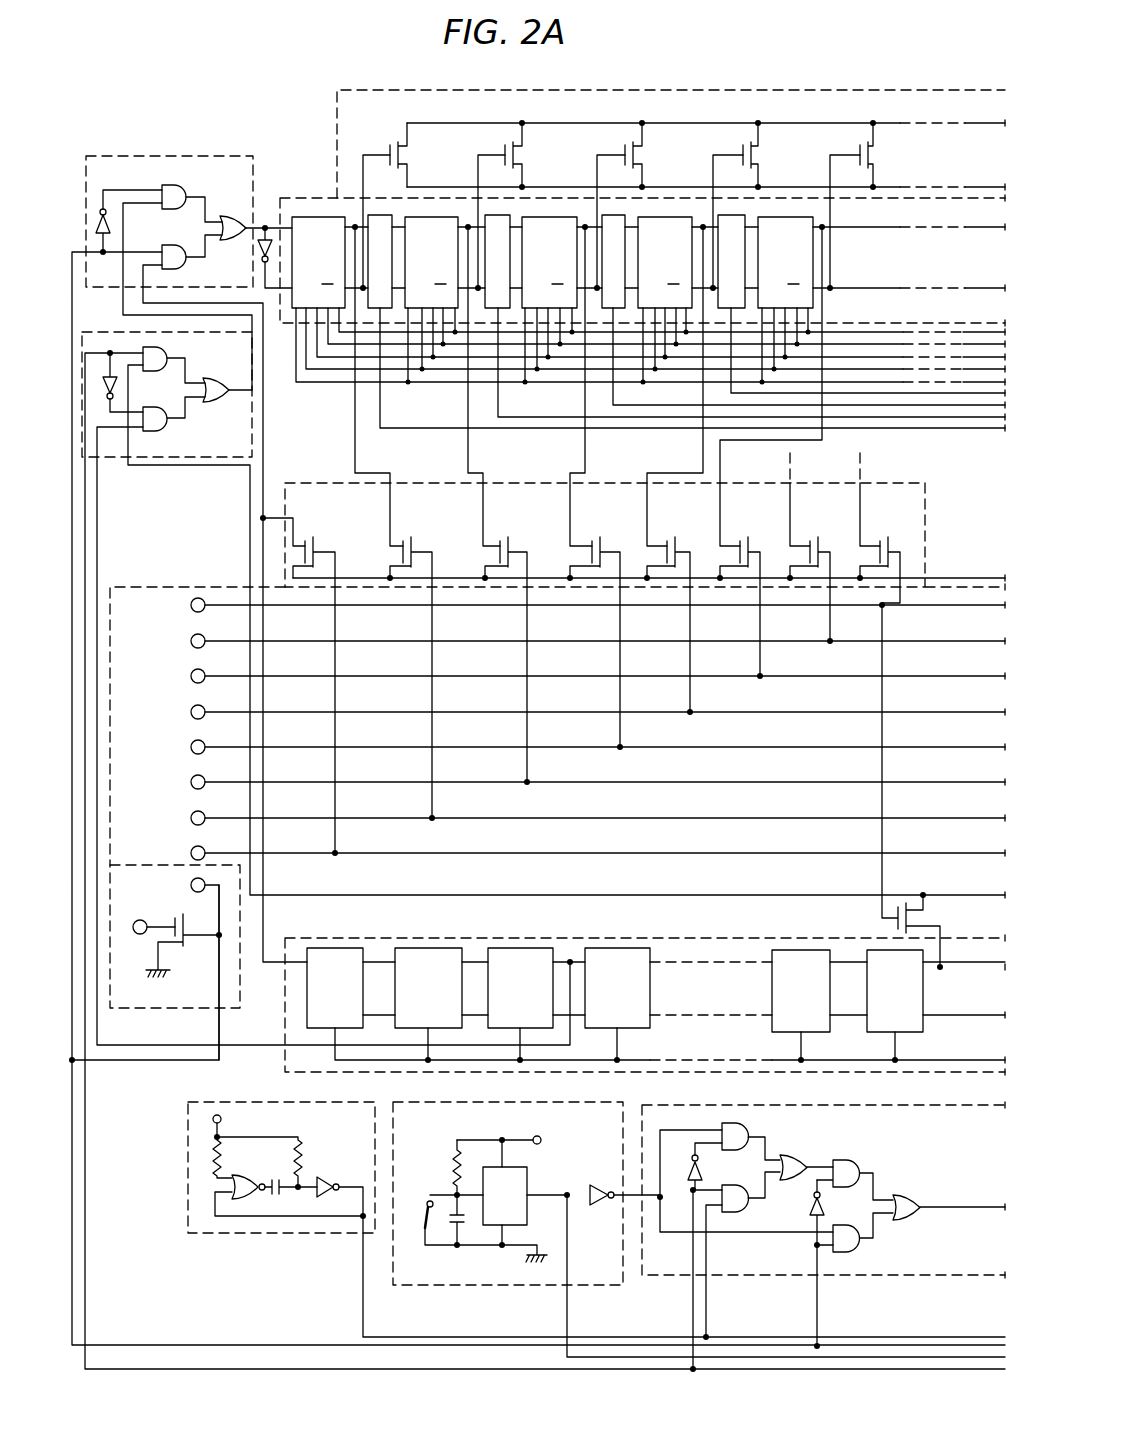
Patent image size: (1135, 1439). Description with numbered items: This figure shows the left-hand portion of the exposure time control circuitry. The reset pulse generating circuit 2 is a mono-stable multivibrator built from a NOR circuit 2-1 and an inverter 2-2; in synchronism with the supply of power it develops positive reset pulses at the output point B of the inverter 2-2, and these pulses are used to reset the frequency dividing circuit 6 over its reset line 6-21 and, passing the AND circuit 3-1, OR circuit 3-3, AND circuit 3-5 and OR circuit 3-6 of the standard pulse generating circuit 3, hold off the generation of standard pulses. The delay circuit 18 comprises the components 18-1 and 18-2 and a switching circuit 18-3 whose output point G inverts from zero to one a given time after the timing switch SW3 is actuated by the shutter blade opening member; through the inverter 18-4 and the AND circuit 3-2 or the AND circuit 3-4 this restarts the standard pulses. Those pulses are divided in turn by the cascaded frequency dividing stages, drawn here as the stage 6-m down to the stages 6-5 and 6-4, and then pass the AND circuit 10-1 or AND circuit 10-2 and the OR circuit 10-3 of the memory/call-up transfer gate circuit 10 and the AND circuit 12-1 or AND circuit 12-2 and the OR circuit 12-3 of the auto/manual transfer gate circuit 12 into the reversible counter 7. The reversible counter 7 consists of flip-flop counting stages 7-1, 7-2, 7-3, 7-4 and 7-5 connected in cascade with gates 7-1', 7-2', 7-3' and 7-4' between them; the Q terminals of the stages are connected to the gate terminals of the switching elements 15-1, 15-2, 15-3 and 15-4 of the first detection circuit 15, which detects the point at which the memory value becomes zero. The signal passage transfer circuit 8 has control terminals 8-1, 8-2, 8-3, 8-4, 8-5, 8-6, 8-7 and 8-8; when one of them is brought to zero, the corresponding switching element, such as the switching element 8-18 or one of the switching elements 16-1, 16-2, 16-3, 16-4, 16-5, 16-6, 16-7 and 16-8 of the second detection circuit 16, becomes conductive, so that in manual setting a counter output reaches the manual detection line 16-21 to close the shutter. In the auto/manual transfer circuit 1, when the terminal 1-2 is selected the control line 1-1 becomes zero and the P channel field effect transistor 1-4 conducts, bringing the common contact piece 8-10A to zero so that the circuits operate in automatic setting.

The auto/manual transfer circuit 1 is at (137, 1008).
The control line 1-1 is at (219, 1016).
The terminal 1-2 is at (177, 886).
The P channel field effect transistor 1-4 is at (184, 943).
The reset pulse generating circuit 2 is at (188, 1163).
The NOR circuit 2-1 is at (245, 1177).
The inverter 2-2 is at (326, 1176).
The standard pulse generating circuit 3 is at (730, 1275).
The AND circuit 3-1 is at (738, 1212).
The AND circuit 3-2 is at (740, 1124).
The OR circuit 3-3 is at (795, 1156).
The AND circuit 3-4 is at (850, 1252).
The AND circuit 3-5 is at (853, 1162).
The OR circuit 3-6 is at (912, 1196).
The frequency dividing circuit 6 is at (745, 935).
The frequency dividing stage 6-m is at (335, 988).
The frequency dividing stage 6-5 is at (801, 991).
The frequency dividing stage 6-4 is at (895, 991).
The reset line 6-21 is at (958, 1062).
The reversible counter 7 is at (318, 195).
The flip-flop counting stage 7-1 is at (318, 262).
The gate 7-1' is at (380, 261).
The flip-flop counting stage 7-2 is at (431, 262).
The gate 7-2' is at (497, 261).
The flip-flop counting stage 7-3 is at (549, 262).
The gate 7-3' is at (613, 261).
The flip-flop counting stage 7-4 is at (665, 262).
The gate 7-4' is at (731, 261).
The flip-flop counting stage 7-5 is at (785, 262).
The signal passage transfer circuit 8 is at (125, 587).
The control terminal 8-1 is at (576, 853).
The control terminal 8-2 is at (576, 818).
The control terminal 8-3 is at (576, 782).
The control terminal 8-4 is at (576, 747).
The control terminal 8-5 is at (576, 712).
The control terminal 8-6 is at (576, 676).
The control terminal 8-7 is at (576, 641).
The control terminal 8-8 is at (576, 605).
The common contact piece 8-10A is at (142, 917).
The switching element 8-18 is at (902, 898).
The memory/call-up transfer gate circuit 10 is at (120, 332).
The AND circuit 10-1 is at (166, 350).
The AND circuit 10-2 is at (158, 407).
The OR circuit 10-3 is at (213, 402).
The auto/manual transfer gate circuit 12 is at (212, 156).
The AND circuit 12-1 is at (180, 185).
The AND circuit 12-2 is at (178, 246).
The OR circuit 12-3 is at (233, 215).
The No. 1 detection circuit 15 is at (930, 88).
The switching element 15-1 is at (411, 162).
The switching element 15-2 is at (527, 162).
The switching element 15-3 is at (645, 162).
The switching element 15-4 is at (762, 162).
The No. 2 detection circuit 16 is at (928, 497).
The switching element 16-1 is at (310, 535).
The switching element 16-2 is at (410, 537).
The switching element 16-3 is at (505, 537).
The switching element 16-4 is at (597, 537).
The switching element 16-5 is at (672, 537).
The switching element 16-6 is at (745, 537).
The switching element 16-7 is at (825, 525).
The switching element 16-8 is at (895, 525).
The manual detection line 16-21 is at (938, 578).
The delay circuit 18 is at (465, 1285).
The capacitor 18-1 is at (450, 1232).
The resistor 18-2 is at (452, 1160).
The switching circuit 18-3 is at (505, 1196).
The inverter 18-4 is at (599, 1183).
The output point B is at (350, 1276).
The output point G is at (578, 1216).
The timing switch SW3 is at (417, 1203).